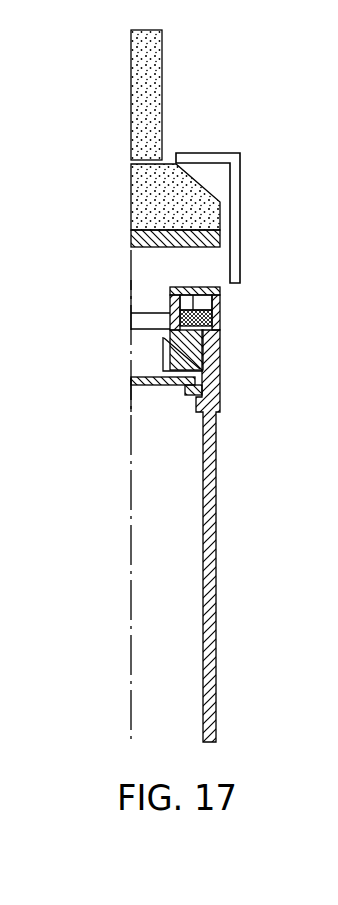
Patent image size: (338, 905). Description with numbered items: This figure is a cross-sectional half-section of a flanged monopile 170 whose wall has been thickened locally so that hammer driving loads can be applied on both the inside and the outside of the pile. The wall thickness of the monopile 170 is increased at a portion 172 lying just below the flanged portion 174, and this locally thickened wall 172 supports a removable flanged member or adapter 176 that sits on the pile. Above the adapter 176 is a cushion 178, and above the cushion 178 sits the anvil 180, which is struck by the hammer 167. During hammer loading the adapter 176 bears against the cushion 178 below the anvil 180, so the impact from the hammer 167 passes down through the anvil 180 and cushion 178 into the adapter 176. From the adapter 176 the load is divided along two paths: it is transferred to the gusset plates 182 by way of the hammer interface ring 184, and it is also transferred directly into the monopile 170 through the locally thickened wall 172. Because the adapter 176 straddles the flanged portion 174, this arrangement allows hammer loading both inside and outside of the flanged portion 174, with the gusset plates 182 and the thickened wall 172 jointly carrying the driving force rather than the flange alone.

The hammer 167 is at (161, 90).
The anvil 180 is at (221, 202).
The cushion 178 is at (221, 240).
The removable flanged member or adapter 176 is at (221, 291).
The flanged portion 174 is at (221, 322).
The hammer interface ring 184 is at (170, 309).
The gusset plates 182 is at (221, 360).
The locally thickened wall 172 is at (221, 400).
The monopile 170 is at (217, 500).